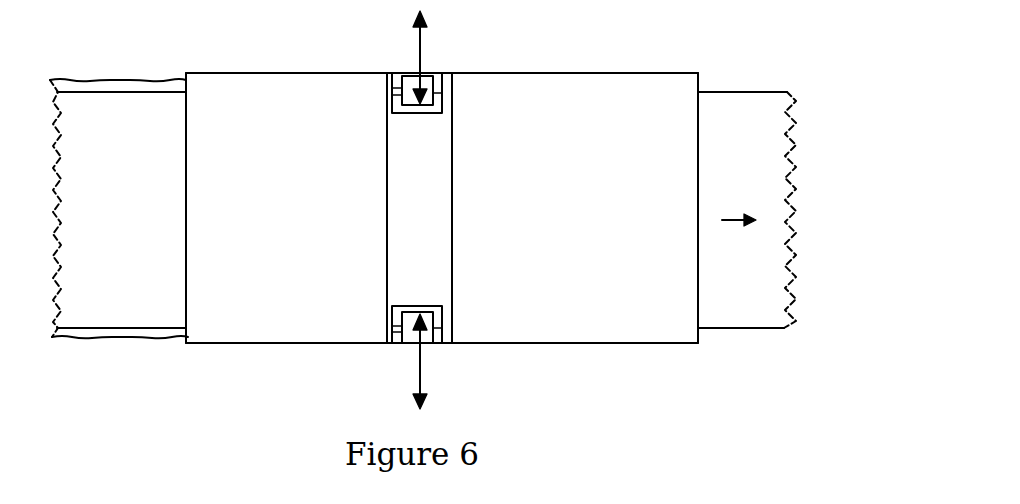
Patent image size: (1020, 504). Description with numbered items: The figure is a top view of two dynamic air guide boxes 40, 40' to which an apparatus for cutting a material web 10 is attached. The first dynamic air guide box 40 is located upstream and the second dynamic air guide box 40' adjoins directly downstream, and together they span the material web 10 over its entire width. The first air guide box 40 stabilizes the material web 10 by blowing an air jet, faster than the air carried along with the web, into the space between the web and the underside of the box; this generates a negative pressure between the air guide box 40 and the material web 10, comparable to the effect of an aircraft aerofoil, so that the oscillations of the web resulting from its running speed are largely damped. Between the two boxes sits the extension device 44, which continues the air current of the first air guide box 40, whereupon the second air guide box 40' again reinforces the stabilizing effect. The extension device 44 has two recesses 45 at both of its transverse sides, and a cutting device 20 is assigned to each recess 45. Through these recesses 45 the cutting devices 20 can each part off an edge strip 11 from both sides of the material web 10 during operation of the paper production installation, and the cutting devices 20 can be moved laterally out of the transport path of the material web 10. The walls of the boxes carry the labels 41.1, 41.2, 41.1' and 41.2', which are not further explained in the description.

The material web 10 is at (92, 338).
The edge strip 11 is at (138, 330).
The cutting device 20 is at (428, 73).
The dynamic air guide box 40 is at (286, 185).
The second dynamic air guide box 40' is at (575, 188).
The first wall of first housing part 41.1 is at (137, 186).
The second wall of first housing part 41.2 is at (327, 183).
The first wall of second housing part 41.1' is at (533, 174).
The second wall of second housing part 41.2' is at (760, 198).
The extension device 44 is at (448, 73).
The recess 45 is at (398, 88).